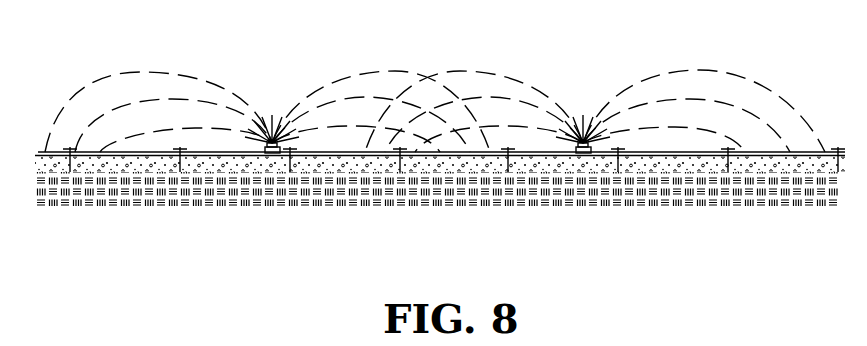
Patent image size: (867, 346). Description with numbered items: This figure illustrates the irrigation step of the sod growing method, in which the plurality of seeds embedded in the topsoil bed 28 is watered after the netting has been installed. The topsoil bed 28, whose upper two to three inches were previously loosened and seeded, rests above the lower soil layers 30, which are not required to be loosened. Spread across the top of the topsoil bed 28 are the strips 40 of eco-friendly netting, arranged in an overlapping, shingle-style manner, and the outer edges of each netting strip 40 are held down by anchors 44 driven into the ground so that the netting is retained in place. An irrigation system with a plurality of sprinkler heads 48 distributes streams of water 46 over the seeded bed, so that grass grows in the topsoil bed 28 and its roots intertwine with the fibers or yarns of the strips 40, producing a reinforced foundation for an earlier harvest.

The topsoil bed 28 is at (225, 168).
The lower soil layers 30 is at (123, 190).
The strips of eco-friendly netting 40 is at (112, 152).
The anchors 44 is at (70, 172).
The streams of water 46 is at (113, 107).
The sprinkler heads 48 is at (273, 140).